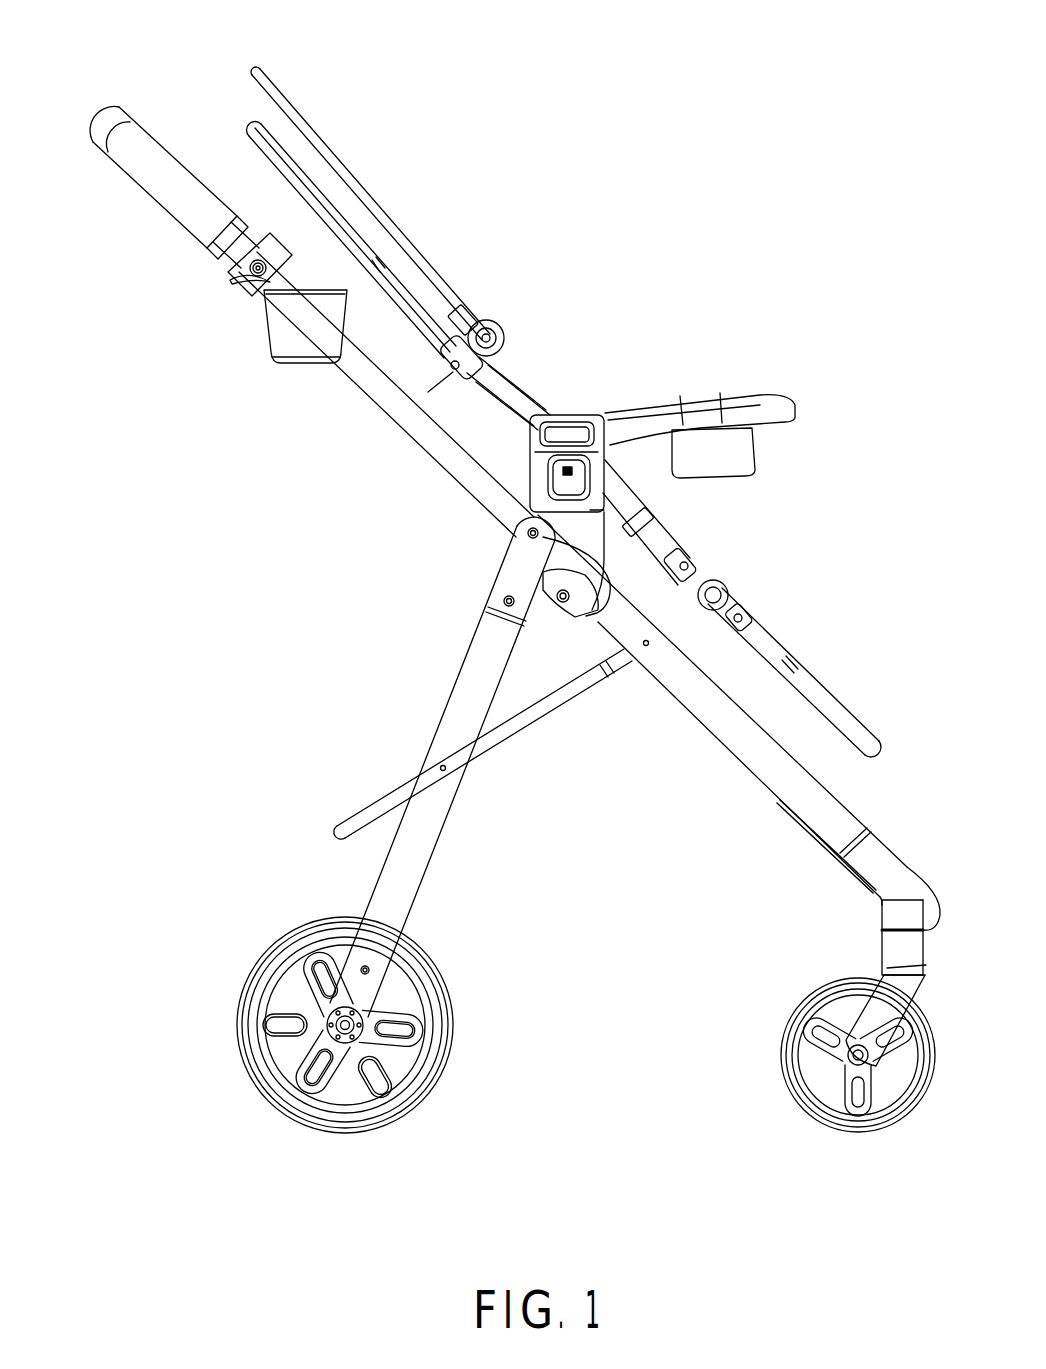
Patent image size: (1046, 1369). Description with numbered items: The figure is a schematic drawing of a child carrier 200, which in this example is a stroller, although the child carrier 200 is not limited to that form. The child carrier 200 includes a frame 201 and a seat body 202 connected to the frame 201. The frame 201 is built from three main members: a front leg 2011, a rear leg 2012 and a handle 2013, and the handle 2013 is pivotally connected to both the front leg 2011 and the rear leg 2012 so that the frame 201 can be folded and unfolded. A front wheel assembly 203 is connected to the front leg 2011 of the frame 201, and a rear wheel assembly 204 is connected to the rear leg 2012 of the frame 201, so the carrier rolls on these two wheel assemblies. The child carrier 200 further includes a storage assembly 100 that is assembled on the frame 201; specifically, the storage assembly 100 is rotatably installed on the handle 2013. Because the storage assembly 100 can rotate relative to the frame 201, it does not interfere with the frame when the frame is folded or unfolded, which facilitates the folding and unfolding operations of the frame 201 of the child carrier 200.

The child carrier 200 is at (122, 25).
The storage assembly 100 is at (253, 338).
The frame 201 is at (353, 576).
The front leg 2011 is at (768, 770).
The rear leg 2012 is at (463, 713).
The handle 2013 is at (450, 462).
The seat body 202 is at (548, 356).
The front wheel assembly 203 is at (800, 1128).
The rear wheel assembly 204 is at (255, 1103).